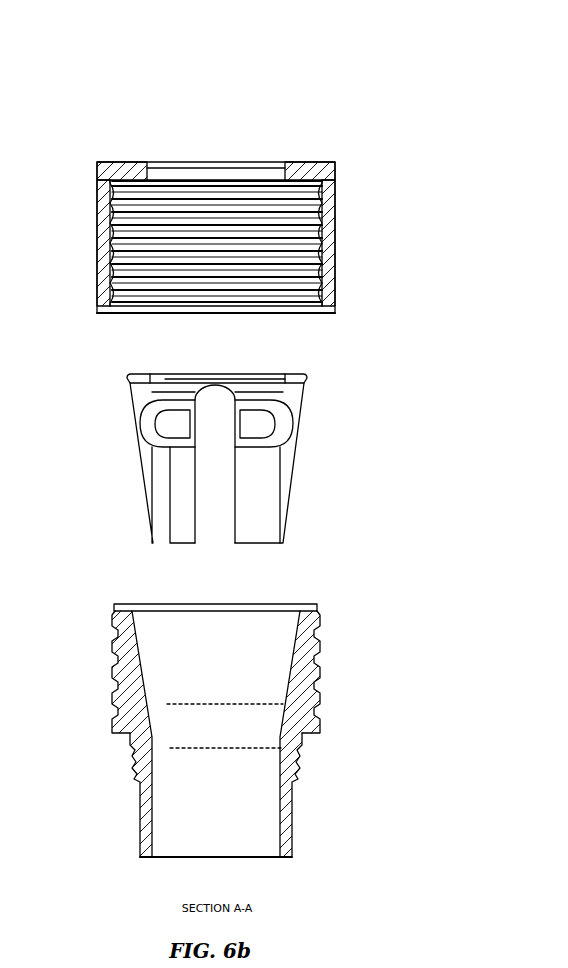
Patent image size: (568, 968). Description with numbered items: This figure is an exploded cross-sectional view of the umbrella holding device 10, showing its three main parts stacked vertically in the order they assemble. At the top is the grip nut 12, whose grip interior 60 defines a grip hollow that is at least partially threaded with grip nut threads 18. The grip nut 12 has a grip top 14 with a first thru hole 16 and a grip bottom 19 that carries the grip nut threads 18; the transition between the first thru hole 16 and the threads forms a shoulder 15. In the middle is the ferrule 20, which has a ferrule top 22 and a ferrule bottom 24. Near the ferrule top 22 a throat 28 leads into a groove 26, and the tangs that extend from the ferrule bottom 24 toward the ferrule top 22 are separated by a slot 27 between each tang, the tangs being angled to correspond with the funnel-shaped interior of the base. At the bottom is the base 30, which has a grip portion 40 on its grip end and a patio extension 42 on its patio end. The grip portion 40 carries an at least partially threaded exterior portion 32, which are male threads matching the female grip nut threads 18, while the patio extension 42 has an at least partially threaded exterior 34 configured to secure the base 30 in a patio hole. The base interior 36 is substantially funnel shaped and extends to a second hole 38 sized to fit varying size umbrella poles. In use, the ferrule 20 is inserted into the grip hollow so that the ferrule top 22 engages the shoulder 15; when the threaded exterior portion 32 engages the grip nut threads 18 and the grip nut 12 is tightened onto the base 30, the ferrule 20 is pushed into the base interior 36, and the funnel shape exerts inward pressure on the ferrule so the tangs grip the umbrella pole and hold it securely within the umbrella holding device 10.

The umbrella holding device 10 is at (268, 108).
The grip nut 12 is at (340, 168).
The grip top 14 is at (305, 162).
The shoulder 15 is at (130, 178).
The first thru hole 16 is at (193, 162).
The grip nut threads 18 is at (285, 243).
The grip bottom 19 is at (120, 314).
The grip interior 60 is at (290, 280).
The ferrule 20 is at (300, 448).
The ferrule top 22 is at (240, 375).
The throat 28 is at (165, 385).
The groove 26 is at (270, 415).
The slot 27 is at (237, 520).
The ferrule bottom 24 is at (180, 545).
The base 30 is at (302, 679).
The grip portion 40 is at (260, 604).
The at least partially threaded exterior portion 32 is at (323, 633).
The at least partially threaded exterior 34 is at (296, 764).
The base interior 36 is at (177, 658).
The second hole 38 is at (195, 827).
The patio extension 42 is at (210, 860).